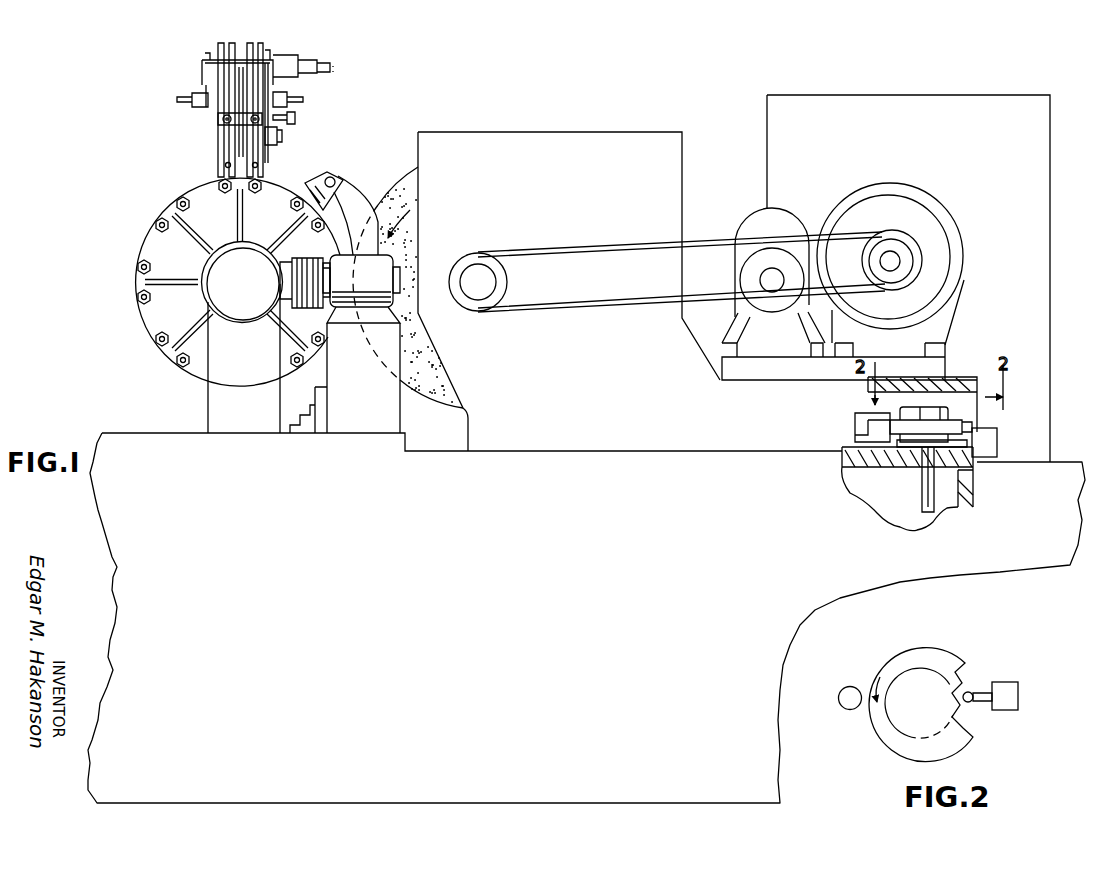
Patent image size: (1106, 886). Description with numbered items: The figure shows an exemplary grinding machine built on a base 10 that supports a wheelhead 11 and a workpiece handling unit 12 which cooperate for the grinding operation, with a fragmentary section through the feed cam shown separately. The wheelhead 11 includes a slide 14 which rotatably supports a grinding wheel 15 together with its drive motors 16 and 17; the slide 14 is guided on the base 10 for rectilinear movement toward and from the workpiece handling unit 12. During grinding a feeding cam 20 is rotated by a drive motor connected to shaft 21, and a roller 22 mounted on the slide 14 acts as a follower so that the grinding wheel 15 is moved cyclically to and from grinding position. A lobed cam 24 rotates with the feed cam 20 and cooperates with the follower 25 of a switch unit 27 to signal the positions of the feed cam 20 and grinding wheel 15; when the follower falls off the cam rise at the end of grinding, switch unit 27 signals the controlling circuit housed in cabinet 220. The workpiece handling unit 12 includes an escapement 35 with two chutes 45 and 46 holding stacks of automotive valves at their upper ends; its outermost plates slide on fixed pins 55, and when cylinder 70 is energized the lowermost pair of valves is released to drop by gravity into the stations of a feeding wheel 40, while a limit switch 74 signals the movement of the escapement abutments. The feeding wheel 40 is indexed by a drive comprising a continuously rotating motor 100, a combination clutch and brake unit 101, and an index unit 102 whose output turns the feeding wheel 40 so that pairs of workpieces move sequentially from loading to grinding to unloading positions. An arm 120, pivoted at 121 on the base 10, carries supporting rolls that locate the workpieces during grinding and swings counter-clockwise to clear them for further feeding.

In FIG. 1, the base 10 is at (600, 565).
In FIG. 1, the wheelhead 11 is at (683, 156).
In FIG. 1, the workpiece handling unit 12 is at (222, 301).
In FIG. 1, the slide 14 is at (698, 435).
In FIG. 1, the grinding wheel 15 is at (416, 240).
In FIG. 1, the drive motor 16 is at (885, 208).
In FIG. 1, the drive motor 17 is at (781, 258).
In FIG. 1, the feeding cam 20 is at (978, 426).
In FIG. 2, the feeding cam 20 is at (913, 656).
In FIG. 1, the shaft 21 is at (935, 500).
In FIG. 1, the roller 22 is at (856, 428).
In FIG. 2, the roller 22 is at (843, 688).
In FIG. 1, the lobed cam 24 is at (906, 448).
In FIG. 2, the lobed cam 24 is at (962, 690).
In FIG. 2, the follower 25 is at (975, 705).
In FIG. 1, the switch unit 27 is at (999, 441).
In FIG. 2, the switch unit 27 is at (1020, 691).
In FIG. 1, the escapement 35 is at (247, 107).
In FIG. 1, the feeding wheel 40 is at (160, 252).
In FIG. 1, the chute 45 is at (226, 142).
In FIG. 1, the chute 46 is at (256, 148).
In FIG. 1, the pins 55 is at (203, 62).
In FIG. 1, the cylinder 70 is at (293, 63).
In FIG. 1, the limit switch 74 is at (290, 122).
In FIG. 1, the motor 100 is at (402, 306).
In FIG. 1, the combination clutch and brake unit 101 is at (328, 338).
In FIG. 1, the index unit 102 is at (245, 298).
In FIG. 1, the arm 120 is at (355, 198).
In FIG. 1, the pivot 121 is at (333, 178).
In FIG. 1, the cabinet 220 is at (1028, 166).